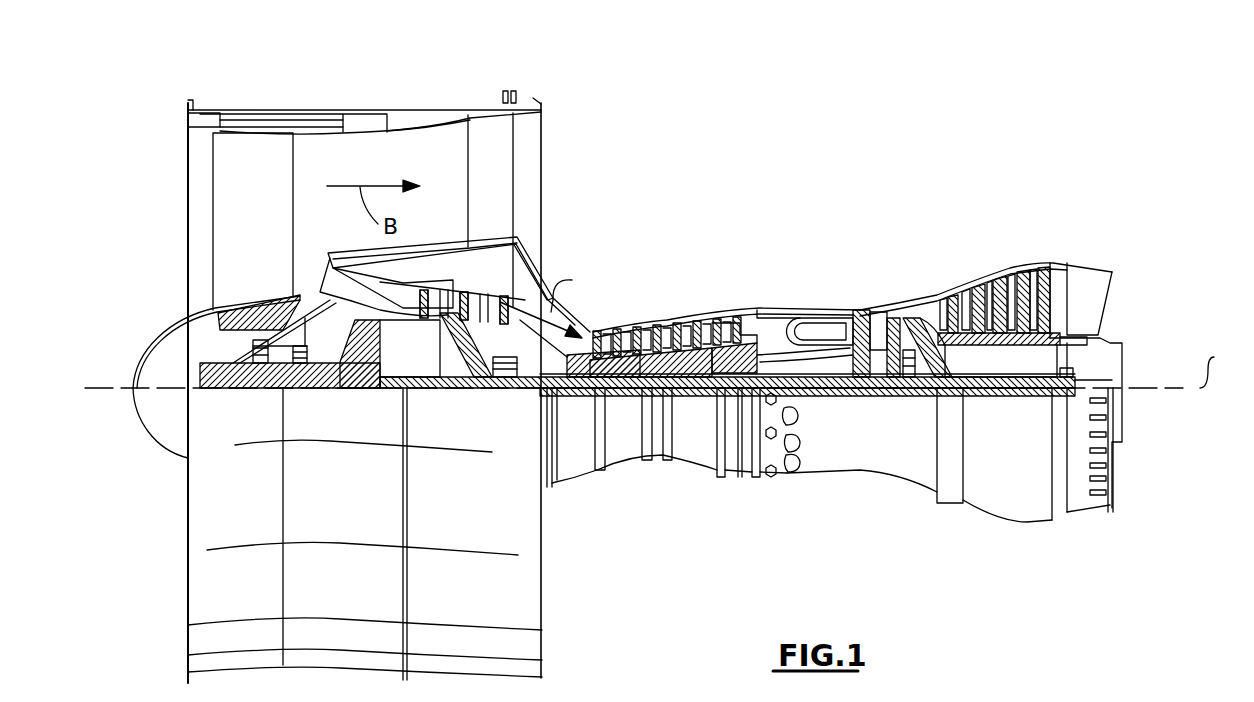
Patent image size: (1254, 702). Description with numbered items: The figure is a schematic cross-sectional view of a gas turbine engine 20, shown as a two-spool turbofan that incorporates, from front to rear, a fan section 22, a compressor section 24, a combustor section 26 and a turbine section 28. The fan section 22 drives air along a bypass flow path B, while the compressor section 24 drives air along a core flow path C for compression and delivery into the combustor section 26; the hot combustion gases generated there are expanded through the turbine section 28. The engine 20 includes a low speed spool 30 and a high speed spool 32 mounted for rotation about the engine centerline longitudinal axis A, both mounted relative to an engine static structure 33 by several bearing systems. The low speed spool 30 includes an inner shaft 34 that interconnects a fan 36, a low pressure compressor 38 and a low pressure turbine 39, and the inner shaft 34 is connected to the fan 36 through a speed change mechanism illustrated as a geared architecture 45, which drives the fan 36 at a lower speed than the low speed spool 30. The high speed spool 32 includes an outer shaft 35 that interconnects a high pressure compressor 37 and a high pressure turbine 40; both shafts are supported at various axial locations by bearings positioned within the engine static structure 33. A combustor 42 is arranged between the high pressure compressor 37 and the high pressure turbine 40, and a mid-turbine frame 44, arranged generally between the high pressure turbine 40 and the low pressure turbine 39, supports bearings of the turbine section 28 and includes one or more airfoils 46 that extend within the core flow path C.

The gas turbine engine 20 is at (814, 162).
The fan section 22 is at (296, 105).
The compressor section 24 is at (590, 330).
The combustor section 26 is at (816, 304).
The turbine section 28 is at (954, 358).
The low speed spool 30 is at (693, 393).
The high speed spool 32 is at (737, 360).
The engine static structure 33 is at (736, 473).
The inner shaft 34 is at (558, 392).
The outer shaft 35 is at (818, 380).
The fan 36 is at (270, 236).
The high pressure compressor 37 is at (668, 325).
The low pressure compressor 38 is at (475, 293).
The low pressure turbine 39 is at (998, 285).
The high pressure turbine 40 is at (869, 308).
The combustor 42 is at (812, 328).
The mid-turbine frame 44 is at (914, 302).
The geared architecture 45 is at (372, 360).
The airfoils 46 is at (917, 323).